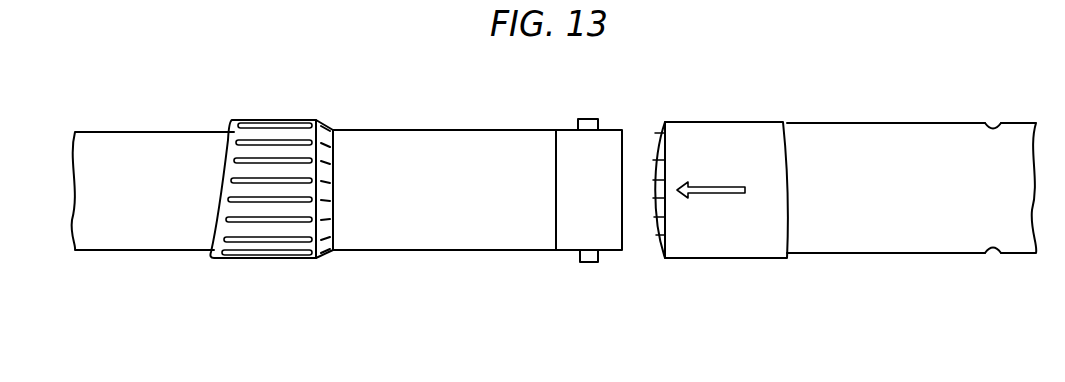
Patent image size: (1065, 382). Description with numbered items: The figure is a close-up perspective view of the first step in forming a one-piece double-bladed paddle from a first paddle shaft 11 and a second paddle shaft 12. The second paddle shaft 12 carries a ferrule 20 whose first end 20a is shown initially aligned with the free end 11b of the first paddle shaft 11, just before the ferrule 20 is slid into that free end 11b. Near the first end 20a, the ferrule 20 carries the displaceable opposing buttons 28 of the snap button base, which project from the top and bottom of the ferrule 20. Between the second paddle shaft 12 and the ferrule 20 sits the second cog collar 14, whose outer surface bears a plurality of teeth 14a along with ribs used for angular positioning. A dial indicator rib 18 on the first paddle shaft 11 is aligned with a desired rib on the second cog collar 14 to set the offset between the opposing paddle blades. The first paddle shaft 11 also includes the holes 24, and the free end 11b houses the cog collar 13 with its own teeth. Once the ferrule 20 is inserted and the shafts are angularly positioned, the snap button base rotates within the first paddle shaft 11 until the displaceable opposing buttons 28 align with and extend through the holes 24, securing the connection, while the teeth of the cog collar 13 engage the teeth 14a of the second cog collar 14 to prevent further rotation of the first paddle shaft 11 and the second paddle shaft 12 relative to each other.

The first paddle shaft 11 is at (878, 255).
The free end of first paddle shaft 11b is at (658, 124).
The second paddle shaft 12 is at (155, 252).
The cog collar 13 is at (715, 122).
The second cog collar 14 is at (278, 260).
The plurality of teeth of cog collar 14 14a is at (336, 200).
The dial indicator rib 18 is at (722, 195).
The ferrule 20 is at (418, 130).
The first end of ferrule 20a is at (622, 222).
The holes of first paddle shaft 24 is at (995, 255).
The displaceable opposing buttons 28 is at (583, 264).